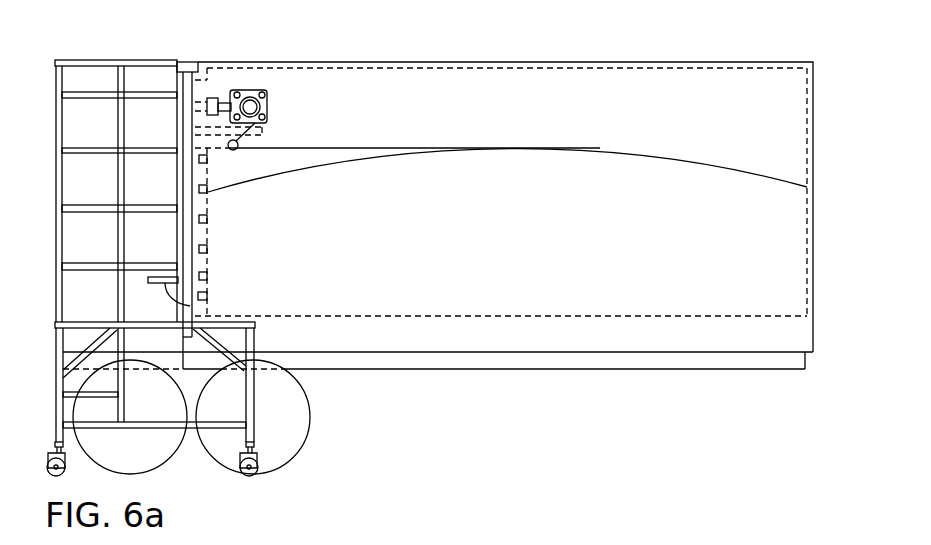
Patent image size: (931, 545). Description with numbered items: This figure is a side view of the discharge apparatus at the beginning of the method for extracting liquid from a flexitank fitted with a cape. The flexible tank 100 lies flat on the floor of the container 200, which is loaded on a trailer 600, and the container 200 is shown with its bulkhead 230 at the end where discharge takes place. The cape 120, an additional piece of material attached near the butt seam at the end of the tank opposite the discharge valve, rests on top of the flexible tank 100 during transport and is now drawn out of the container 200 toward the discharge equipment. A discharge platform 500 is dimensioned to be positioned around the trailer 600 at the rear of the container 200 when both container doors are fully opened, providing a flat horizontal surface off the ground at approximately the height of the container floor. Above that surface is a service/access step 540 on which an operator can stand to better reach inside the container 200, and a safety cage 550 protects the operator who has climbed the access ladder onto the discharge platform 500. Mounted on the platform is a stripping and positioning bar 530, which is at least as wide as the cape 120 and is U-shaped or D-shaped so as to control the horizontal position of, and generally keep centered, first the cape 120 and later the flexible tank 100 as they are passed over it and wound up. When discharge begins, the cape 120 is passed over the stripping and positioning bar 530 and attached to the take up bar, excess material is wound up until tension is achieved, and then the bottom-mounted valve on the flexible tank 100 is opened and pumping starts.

The flexible tank 100 is at (727, 258).
The cape 120 is at (333, 148).
The container 200 is at (702, 345).
The bulkhead 230 is at (204, 233).
The discharge platform 500 is at (250, 407).
The stripping and positioning bar 530 is at (238, 147).
The service/access step 540 is at (190, 306).
The safety cage 550 is at (155, 62).
The trailer 600 is at (588, 363).